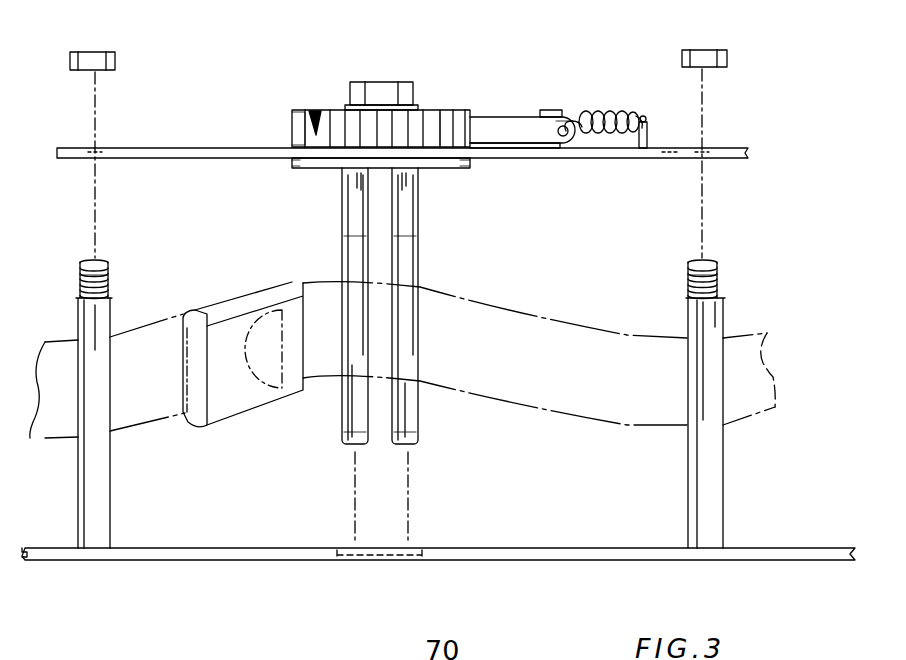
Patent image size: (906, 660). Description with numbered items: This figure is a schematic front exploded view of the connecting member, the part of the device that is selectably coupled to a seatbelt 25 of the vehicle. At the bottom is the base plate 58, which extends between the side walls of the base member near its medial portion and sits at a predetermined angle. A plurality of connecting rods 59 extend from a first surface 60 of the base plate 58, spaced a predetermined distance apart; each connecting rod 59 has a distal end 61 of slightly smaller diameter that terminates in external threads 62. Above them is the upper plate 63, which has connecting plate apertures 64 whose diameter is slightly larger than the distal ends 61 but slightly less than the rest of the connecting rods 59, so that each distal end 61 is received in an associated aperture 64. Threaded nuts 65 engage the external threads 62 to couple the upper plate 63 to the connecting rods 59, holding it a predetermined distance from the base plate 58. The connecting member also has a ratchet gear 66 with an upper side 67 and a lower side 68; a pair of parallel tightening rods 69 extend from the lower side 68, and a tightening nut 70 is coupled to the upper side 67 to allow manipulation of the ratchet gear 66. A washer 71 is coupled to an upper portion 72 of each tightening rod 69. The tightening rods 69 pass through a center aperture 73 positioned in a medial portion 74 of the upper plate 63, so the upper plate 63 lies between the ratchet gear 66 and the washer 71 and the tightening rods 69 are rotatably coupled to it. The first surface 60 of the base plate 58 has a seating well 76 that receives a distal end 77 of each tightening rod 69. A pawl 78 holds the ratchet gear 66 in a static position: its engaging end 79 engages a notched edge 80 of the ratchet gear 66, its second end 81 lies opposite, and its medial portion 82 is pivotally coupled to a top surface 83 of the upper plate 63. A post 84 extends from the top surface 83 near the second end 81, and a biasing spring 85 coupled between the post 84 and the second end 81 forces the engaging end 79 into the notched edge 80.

The seatbelt 25 is at (588, 338).
The base plate 58 is at (232, 563).
The connecting rods 59 is at (105, 492).
The first surface 60 is at (597, 548).
The distal end 61 is at (98, 260).
The external threads 62 is at (108, 274).
The upper plate 63 is at (243, 147).
The connecting plate apertures 64 is at (100, 152).
The threaded nuts 65 is at (115, 62).
The ratchet gear 66 is at (315, 110).
The upper side 67 is at (328, 120).
The lower side 68 is at (293, 158).
The tightening rods 69 is at (342, 252).
The tightening nut 70 is at (399, 94).
The washer 71 is at (457, 168).
The upper portion 72 is at (344, 174).
The center aperture 73 is at (472, 159).
The medial portion 74 is at (296, 140).
The seating well 76 is at (415, 548).
The distal end 77 is at (342, 448).
The pawl 78 is at (516, 118).
The engaging end 79 is at (473, 138).
The notched edge 80 is at (440, 120).
The second end 81 is at (577, 117).
The medial portion 82 is at (540, 124).
The top surface 83 is at (674, 150).
The post 84 is at (647, 137).
The biasing spring 85 is at (601, 110).